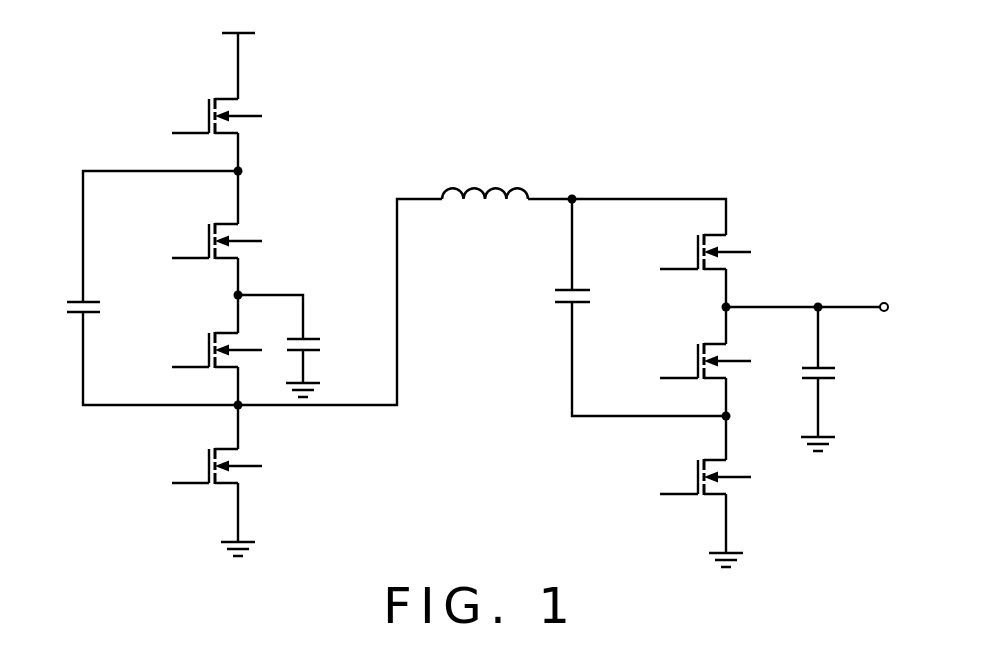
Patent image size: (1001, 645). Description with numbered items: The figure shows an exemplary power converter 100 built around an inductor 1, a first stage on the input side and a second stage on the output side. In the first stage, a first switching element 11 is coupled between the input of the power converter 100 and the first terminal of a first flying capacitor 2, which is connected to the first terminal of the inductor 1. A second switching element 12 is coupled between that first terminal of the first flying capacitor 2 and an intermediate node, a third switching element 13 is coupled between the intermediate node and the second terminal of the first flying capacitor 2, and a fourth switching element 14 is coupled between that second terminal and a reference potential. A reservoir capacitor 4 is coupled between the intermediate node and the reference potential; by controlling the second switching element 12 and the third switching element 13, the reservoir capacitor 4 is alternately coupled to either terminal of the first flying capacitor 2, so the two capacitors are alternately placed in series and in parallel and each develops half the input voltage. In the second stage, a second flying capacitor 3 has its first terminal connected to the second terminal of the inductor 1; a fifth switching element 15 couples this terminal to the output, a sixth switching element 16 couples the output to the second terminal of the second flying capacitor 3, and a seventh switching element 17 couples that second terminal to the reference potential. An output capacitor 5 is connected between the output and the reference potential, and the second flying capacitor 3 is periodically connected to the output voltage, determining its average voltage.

The power converter 100 is at (713, 131).
The inductor 1 is at (507, 182).
The first flying capacitor 2 is at (77, 297).
The second flying capacitor 3 is at (567, 285).
The reservoir capacitor 4 is at (315, 337).
The output capacitor 5 is at (830, 363).
The first switching element 11 is at (205, 112).
The second switching element 12 is at (203, 237).
The third switching element 13 is at (203, 346).
The fourth switching element 14 is at (242, 473).
The fifth switching element 15 is at (692, 250).
The sixth switching element 16 is at (692, 360).
The seventh switching element 17 is at (692, 475).